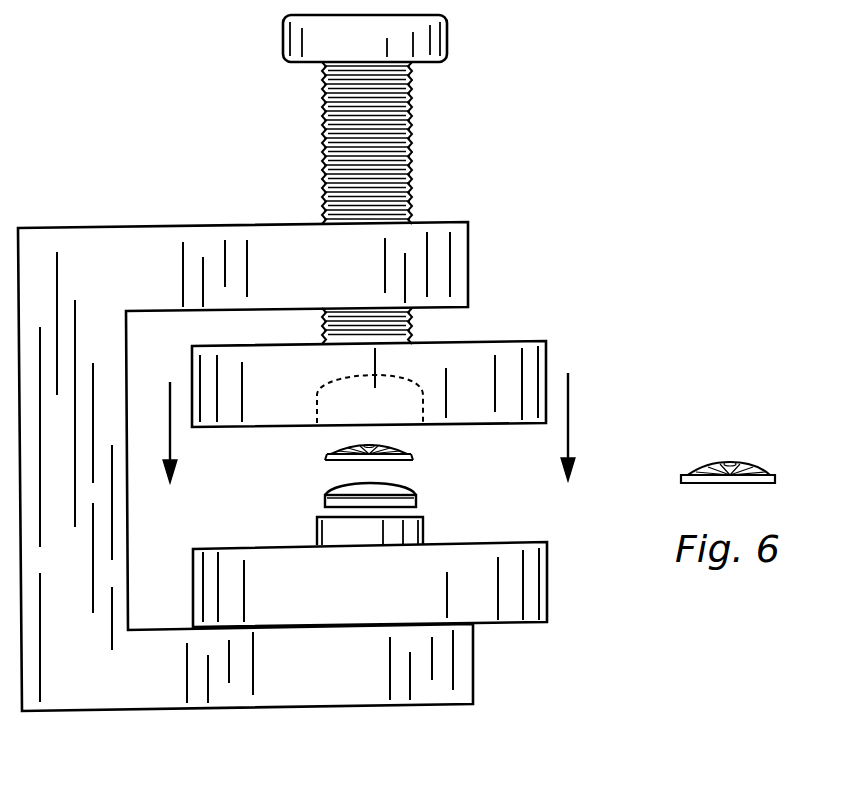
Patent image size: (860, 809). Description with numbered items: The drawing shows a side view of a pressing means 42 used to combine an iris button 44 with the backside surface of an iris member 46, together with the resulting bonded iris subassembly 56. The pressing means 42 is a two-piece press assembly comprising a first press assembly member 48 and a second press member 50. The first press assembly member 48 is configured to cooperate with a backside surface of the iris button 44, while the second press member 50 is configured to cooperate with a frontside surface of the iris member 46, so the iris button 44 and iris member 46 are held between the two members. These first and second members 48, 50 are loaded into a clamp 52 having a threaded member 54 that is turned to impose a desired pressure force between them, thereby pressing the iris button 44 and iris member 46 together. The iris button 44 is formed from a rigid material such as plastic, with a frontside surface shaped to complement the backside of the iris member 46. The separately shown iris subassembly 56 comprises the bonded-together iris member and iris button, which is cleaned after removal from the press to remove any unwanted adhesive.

In FIG. 5, the pressing means 42 is at (160, 105).
In FIG. 5, the iris button 44 is at (390, 492).
In FIG. 5, the iris member 46 is at (333, 457).
In FIG. 5, the first press assembly member 48 is at (505, 598).
In FIG. 5, the second press member 50 is at (508, 347).
In FIG. 5, the clamp 52 is at (136, 243).
In FIG. 5, the threaded member 54 is at (322, 118).
In FIG. 6, the iris subassembly 56 is at (728, 462).